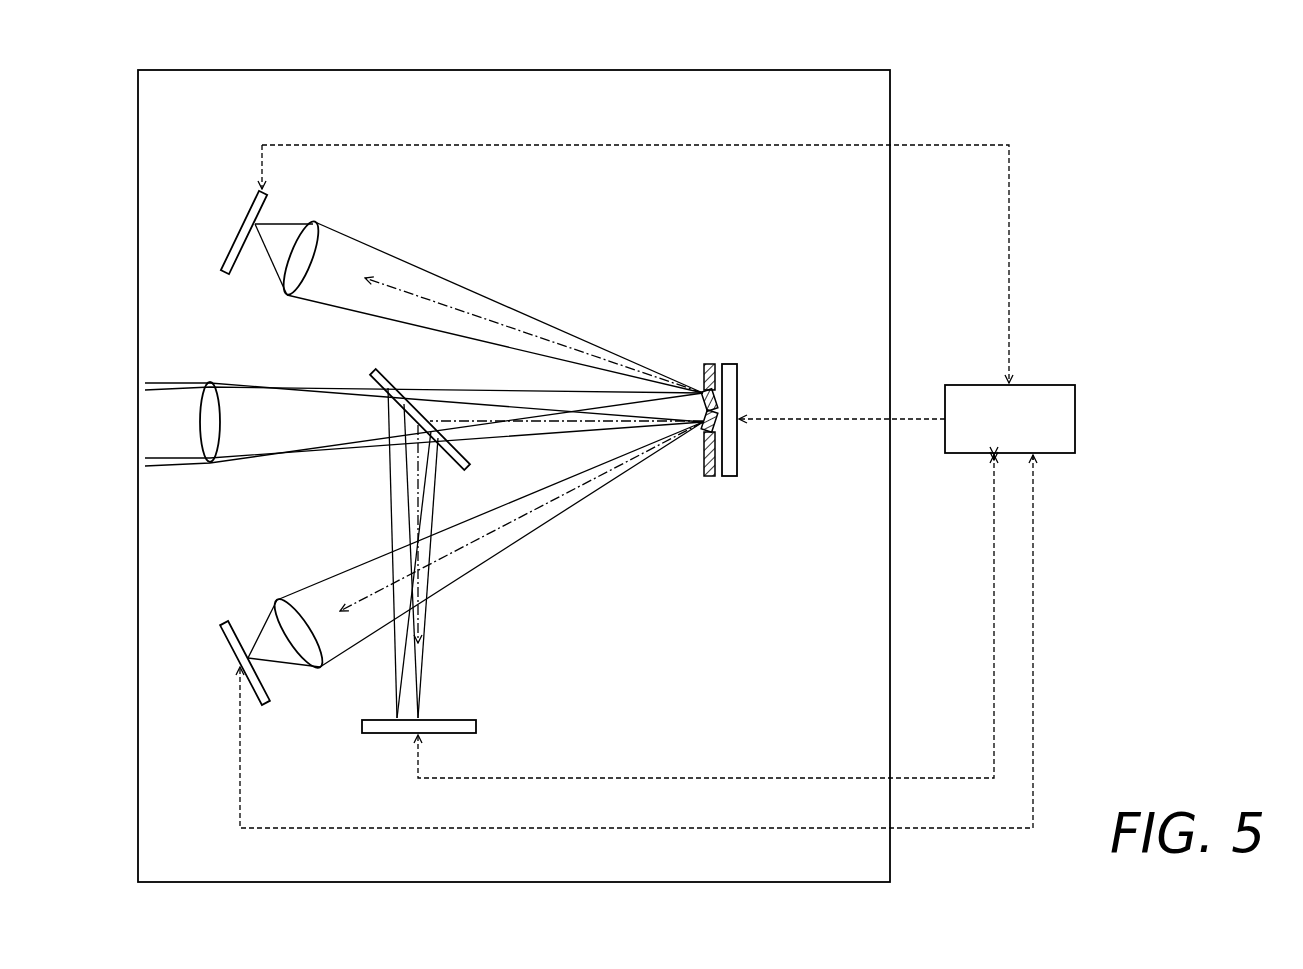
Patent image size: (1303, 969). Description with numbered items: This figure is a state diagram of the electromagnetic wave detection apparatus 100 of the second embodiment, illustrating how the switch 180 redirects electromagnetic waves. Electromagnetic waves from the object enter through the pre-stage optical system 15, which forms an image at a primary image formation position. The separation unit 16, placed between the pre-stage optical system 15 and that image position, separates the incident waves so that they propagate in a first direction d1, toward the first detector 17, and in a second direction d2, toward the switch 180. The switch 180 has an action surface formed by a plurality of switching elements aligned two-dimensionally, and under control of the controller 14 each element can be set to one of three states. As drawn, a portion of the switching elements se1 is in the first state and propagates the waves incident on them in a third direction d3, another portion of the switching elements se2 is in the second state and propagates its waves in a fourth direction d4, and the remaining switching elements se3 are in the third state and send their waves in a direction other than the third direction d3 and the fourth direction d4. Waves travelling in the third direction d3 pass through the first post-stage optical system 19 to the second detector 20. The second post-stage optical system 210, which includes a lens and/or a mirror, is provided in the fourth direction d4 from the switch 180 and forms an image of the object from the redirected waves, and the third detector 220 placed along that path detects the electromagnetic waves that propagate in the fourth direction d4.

The electromagnetic wave detection apparatus 100 is at (220, 69).
The controller 14 is at (968, 455).
The pre-stage optical system 15 is at (210, 382).
The separation unit 16 is at (373, 370).
The first detector 17 is at (478, 727).
The first post-stage optical system 19 is at (278, 600).
The second detector 20 is at (266, 702).
The switch 180 is at (730, 478).
The second post-stage optical system 210 is at (312, 226).
The third detector 220 is at (225, 276).
The switching elements in the first state se1 is at (716, 412).
The switching elements in the second state se2 is at (716, 392).
The switching elements in the third state se3 is at (708, 362).
The first direction d1 is at (432, 617).
The second direction d2 is at (559, 424).
The third direction d3 is at (524, 528).
The fourth direction d4 is at (486, 316).